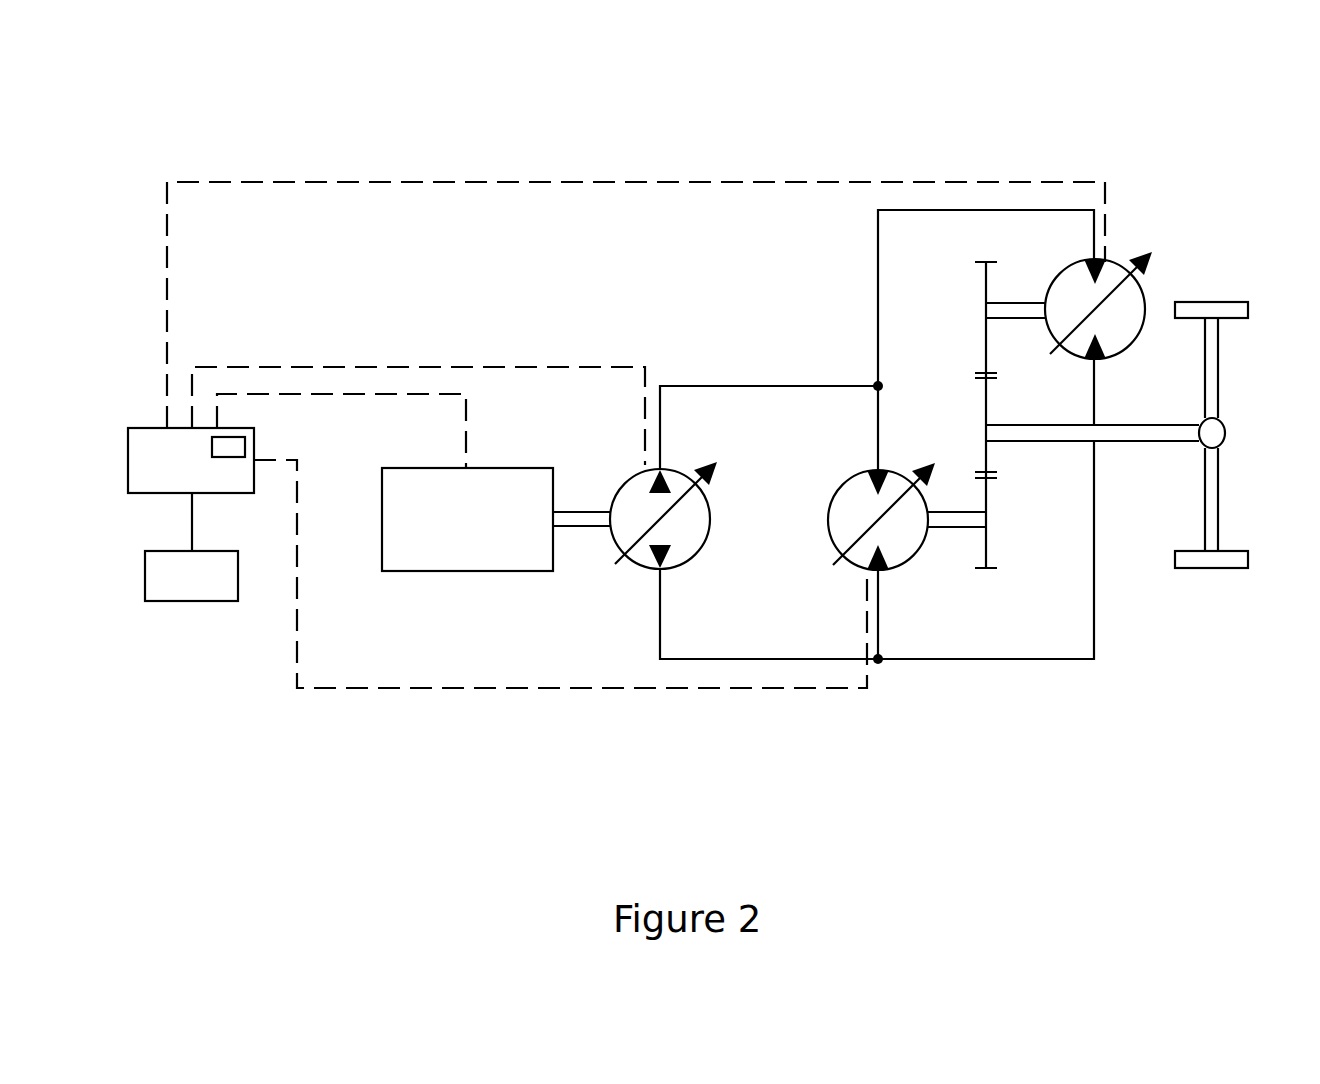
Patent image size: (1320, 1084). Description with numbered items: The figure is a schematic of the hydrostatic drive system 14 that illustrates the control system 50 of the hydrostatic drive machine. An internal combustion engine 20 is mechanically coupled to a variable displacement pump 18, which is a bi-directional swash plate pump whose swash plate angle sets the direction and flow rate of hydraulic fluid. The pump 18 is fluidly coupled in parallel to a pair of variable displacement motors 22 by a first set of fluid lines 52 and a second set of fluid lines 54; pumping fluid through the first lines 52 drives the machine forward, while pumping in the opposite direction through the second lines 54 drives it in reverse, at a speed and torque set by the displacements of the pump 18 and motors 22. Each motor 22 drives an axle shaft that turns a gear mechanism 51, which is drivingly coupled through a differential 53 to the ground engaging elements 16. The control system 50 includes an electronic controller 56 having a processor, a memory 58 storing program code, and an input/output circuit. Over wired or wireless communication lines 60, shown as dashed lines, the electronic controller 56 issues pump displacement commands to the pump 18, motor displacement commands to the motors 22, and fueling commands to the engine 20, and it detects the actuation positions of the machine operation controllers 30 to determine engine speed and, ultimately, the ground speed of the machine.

The hydrostatic drive system 14 is at (633, 716).
The ground engaging elements 16 is at (1210, 302).
The variable displacement pump 18 is at (706, 551).
The internal combustion engine 20 is at (469, 572).
The variable displacement motors 22 is at (1050, 283).
The machine operation controllers 30 is at (196, 602).
The control system 50 is at (689, 124).
The gear mechanism 51 is at (941, 389).
The first set of fluid lines 52 is at (772, 385).
The differential 53 is at (1226, 433).
The second set of fluid lines 54 is at (982, 658).
The electronic controller 56 is at (145, 428).
The memory 58 is at (246, 437).
The communication lines 60 is at (471, 181).